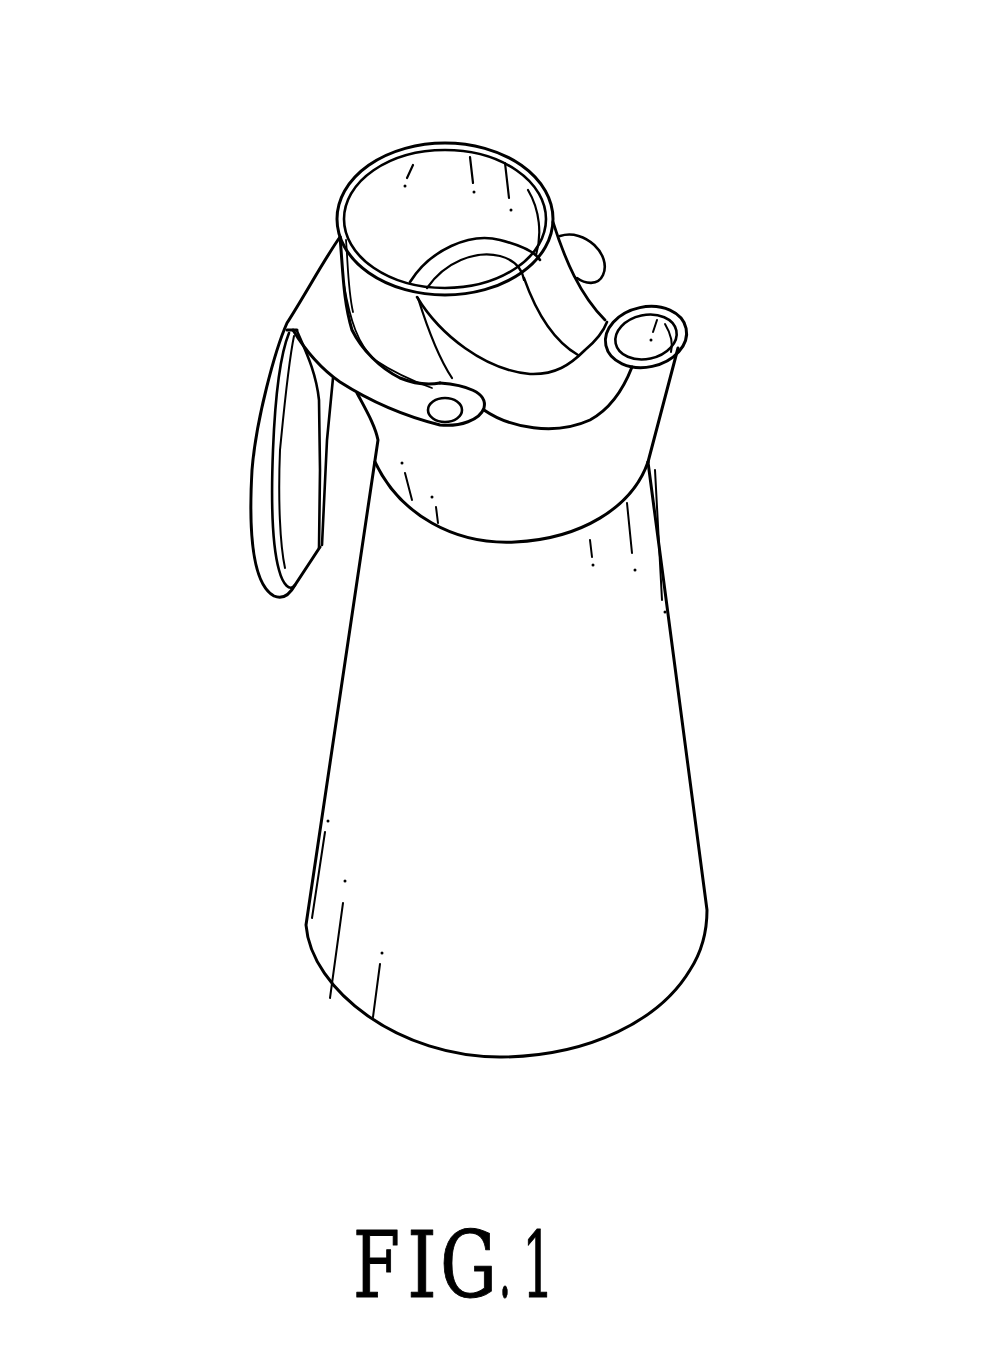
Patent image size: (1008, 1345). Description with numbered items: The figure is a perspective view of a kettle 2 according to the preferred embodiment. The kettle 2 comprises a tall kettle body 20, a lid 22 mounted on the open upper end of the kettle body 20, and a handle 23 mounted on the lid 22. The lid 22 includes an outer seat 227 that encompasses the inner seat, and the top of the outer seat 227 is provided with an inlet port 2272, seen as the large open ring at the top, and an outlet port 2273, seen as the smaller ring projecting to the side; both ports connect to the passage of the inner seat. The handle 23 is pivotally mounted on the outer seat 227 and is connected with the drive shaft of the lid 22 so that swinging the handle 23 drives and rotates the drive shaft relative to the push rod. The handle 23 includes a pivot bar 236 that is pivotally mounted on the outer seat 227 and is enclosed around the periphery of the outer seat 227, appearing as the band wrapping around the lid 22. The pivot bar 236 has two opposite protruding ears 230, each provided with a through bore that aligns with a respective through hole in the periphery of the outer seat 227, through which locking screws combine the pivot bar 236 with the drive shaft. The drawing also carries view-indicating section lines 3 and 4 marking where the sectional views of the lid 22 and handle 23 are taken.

The kettle body 20 is at (675, 800).
The lid 22 is at (607, 443).
The handle 23 is at (252, 387).
The outer seat 227 is at (375, 307).
The inlet port 2272 is at (410, 178).
The outlet port 2273 is at (680, 317).
The protruding ear 230 is at (602, 257).
The pivot bar 236 is at (356, 398).
The kettle 2 is at (783, 343).
The section line 3- 3 is at (345, 153).
The section line 4- 4 is at (620, 50).